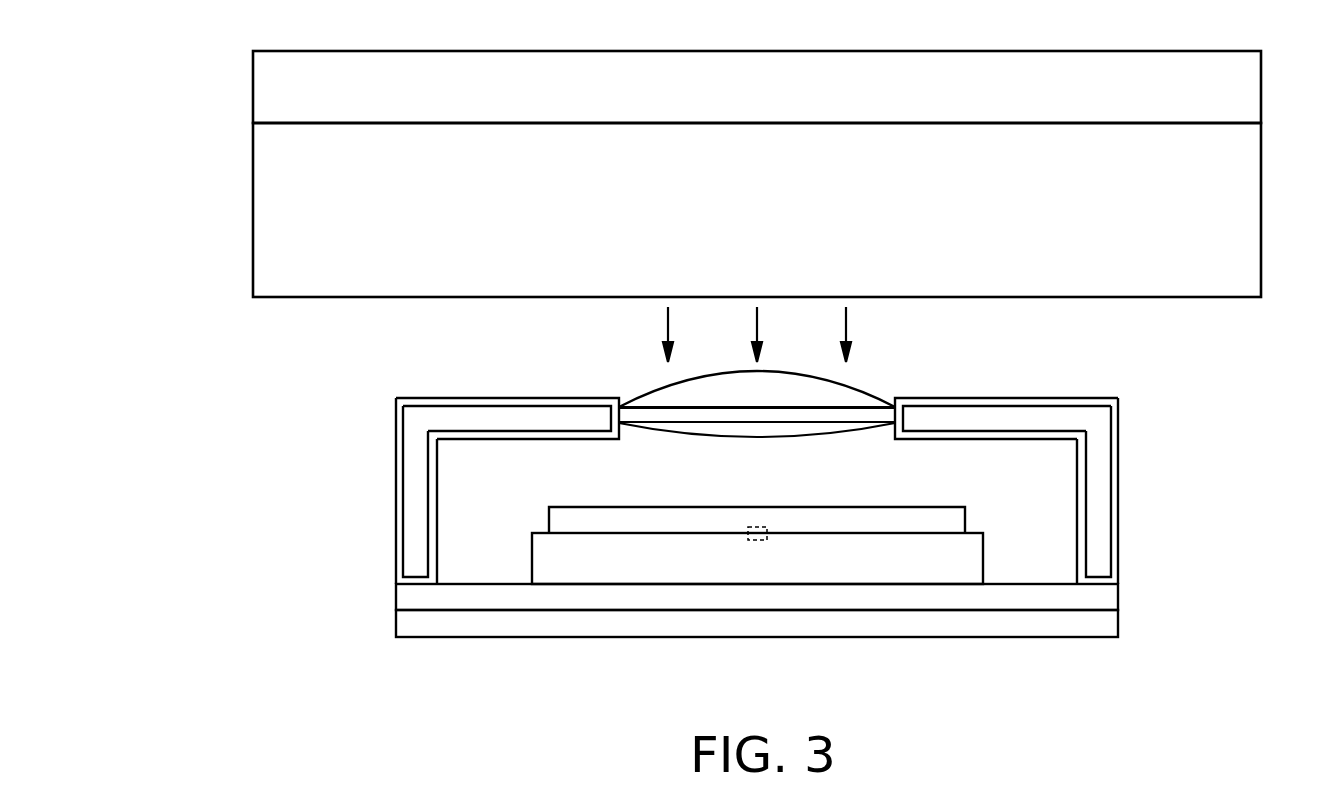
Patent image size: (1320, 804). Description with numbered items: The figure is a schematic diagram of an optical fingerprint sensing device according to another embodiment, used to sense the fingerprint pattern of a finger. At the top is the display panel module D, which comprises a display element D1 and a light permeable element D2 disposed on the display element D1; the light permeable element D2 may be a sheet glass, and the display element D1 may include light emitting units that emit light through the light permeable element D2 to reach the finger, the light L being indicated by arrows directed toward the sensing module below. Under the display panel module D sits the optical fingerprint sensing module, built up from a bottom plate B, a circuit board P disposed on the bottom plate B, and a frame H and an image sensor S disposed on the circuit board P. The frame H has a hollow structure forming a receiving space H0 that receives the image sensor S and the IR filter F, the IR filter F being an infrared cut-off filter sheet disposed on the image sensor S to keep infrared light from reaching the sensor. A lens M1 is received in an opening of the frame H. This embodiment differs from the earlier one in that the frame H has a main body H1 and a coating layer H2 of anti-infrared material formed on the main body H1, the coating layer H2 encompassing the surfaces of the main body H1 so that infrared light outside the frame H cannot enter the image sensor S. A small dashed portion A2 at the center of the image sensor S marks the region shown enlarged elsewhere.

The display panel module D is at (701, 174).
The display element D1 is at (722, 210).
The light permeable element D2 is at (258, 88).
The light L is at (668, 325).
The lens M1 is at (853, 388).
The frame H is at (757, 470).
The receiving space H0 is at (701, 511).
The main body H1 is at (417, 447).
The coating layer H2 is at (488, 437).
The IR filter F is at (960, 516).
The image sensor S is at (977, 557).
The portion A2 is at (757, 540).
The circuit board P is at (403, 596).
The bottom plate B is at (403, 630).